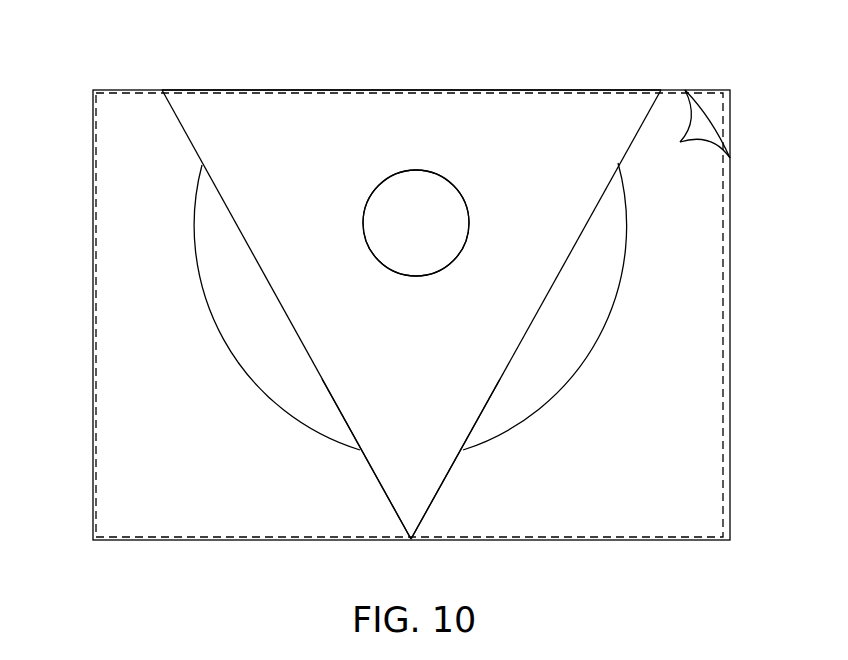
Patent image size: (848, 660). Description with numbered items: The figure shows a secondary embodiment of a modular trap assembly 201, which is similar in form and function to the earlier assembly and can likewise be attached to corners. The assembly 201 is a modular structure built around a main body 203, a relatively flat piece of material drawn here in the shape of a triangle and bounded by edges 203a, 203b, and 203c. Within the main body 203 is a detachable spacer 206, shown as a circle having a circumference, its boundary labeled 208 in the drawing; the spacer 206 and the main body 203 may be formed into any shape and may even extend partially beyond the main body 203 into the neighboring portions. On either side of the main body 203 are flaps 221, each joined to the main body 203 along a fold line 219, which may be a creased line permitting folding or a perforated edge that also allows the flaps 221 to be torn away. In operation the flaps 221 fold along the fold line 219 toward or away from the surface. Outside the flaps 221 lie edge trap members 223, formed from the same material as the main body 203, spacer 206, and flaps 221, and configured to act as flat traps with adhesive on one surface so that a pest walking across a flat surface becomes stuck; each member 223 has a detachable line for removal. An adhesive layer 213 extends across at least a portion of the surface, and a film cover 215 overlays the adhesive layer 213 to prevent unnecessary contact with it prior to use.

The modular trap assembly 201 is at (90, 52).
The main body 203 is at (411, 298).
The edge of main body 203a is at (181, 122).
The edge of main body 203b is at (642, 122).
The edge of main body 203c is at (313, 90).
The detachable spacer 206 is at (437, 238).
The circular boundary 208 is at (461, 187).
The adhesive layer 213 is at (708, 102).
The film cover 215 is at (693, 121).
The fold line 219 is at (332, 397).
The flap 221 is at (288, 369).
The edge trap member 223 is at (215, 426).